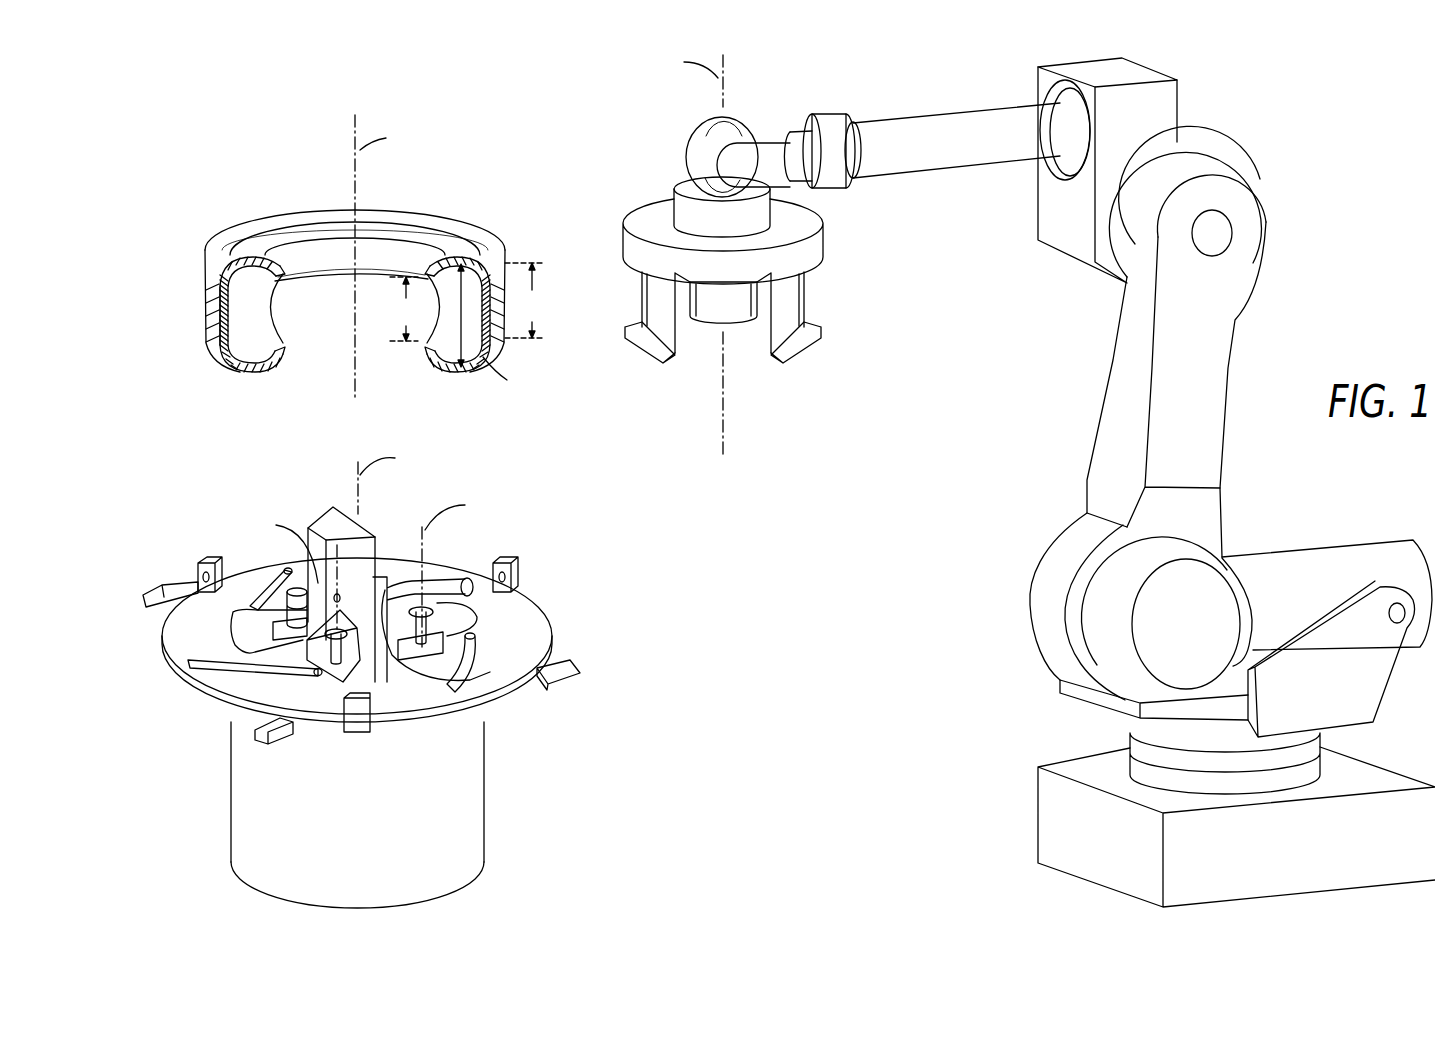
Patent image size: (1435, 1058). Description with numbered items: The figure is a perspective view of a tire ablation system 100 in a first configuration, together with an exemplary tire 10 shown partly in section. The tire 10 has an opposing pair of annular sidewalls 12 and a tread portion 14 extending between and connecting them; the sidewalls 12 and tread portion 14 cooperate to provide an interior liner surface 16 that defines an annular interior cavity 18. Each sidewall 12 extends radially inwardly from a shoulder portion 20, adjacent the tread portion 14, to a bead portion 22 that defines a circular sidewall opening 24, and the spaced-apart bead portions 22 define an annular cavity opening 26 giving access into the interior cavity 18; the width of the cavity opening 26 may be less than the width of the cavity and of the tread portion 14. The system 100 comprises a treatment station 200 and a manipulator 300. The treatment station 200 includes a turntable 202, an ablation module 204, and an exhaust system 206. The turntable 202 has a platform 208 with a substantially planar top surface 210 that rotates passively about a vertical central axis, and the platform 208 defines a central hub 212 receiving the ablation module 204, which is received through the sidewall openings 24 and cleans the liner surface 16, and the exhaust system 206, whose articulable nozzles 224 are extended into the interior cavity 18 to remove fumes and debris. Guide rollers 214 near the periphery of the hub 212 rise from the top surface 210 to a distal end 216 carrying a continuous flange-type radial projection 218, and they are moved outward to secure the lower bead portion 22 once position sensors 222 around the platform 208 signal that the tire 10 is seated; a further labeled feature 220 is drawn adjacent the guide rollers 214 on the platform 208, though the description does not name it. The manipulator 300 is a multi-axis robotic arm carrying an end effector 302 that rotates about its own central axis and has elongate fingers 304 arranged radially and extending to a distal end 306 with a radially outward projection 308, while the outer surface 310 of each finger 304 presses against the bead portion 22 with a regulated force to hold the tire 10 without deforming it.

The tire 10 is at (333, 279).
The sidewall 12 is at (245, 248).
The tread portion 14 is at (199, 294).
The interior liner surface 16 is at (256, 351).
The interior cavity 18 is at (253, 256).
The shoulder portion 20 is at (216, 263).
The bead portion 22 is at (283, 318).
The sidewall opening 24 is at (368, 260).
The cavity opening 26 is at (283, 307).
The tire ablation system 100 is at (1002, 918).
The treatment station 200 is at (493, 880).
The turntable 202 is at (490, 797).
The ablation module 204 is at (320, 513).
The exhaust system 206 is at (443, 578).
The platform 208 is at (560, 628).
The top surface 210 is at (524, 650).
The hub 212 is at (233, 623).
The guide roller 214 is at (273, 663).
The distal end 216 is at (360, 662).
The radial projection 218 is at (336, 645).
The pin guide 220 is at (333, 608).
The position sensor 222 is at (197, 578).
The nozzle 224 is at (516, 601).
The manipulator 300 is at (1032, 883).
The end effector 302 is at (770, 250).
The finger 304 is at (827, 332).
The distal end 306 is at (772, 358).
The projection 308 is at (808, 350).
The outer surface 310 is at (782, 307).